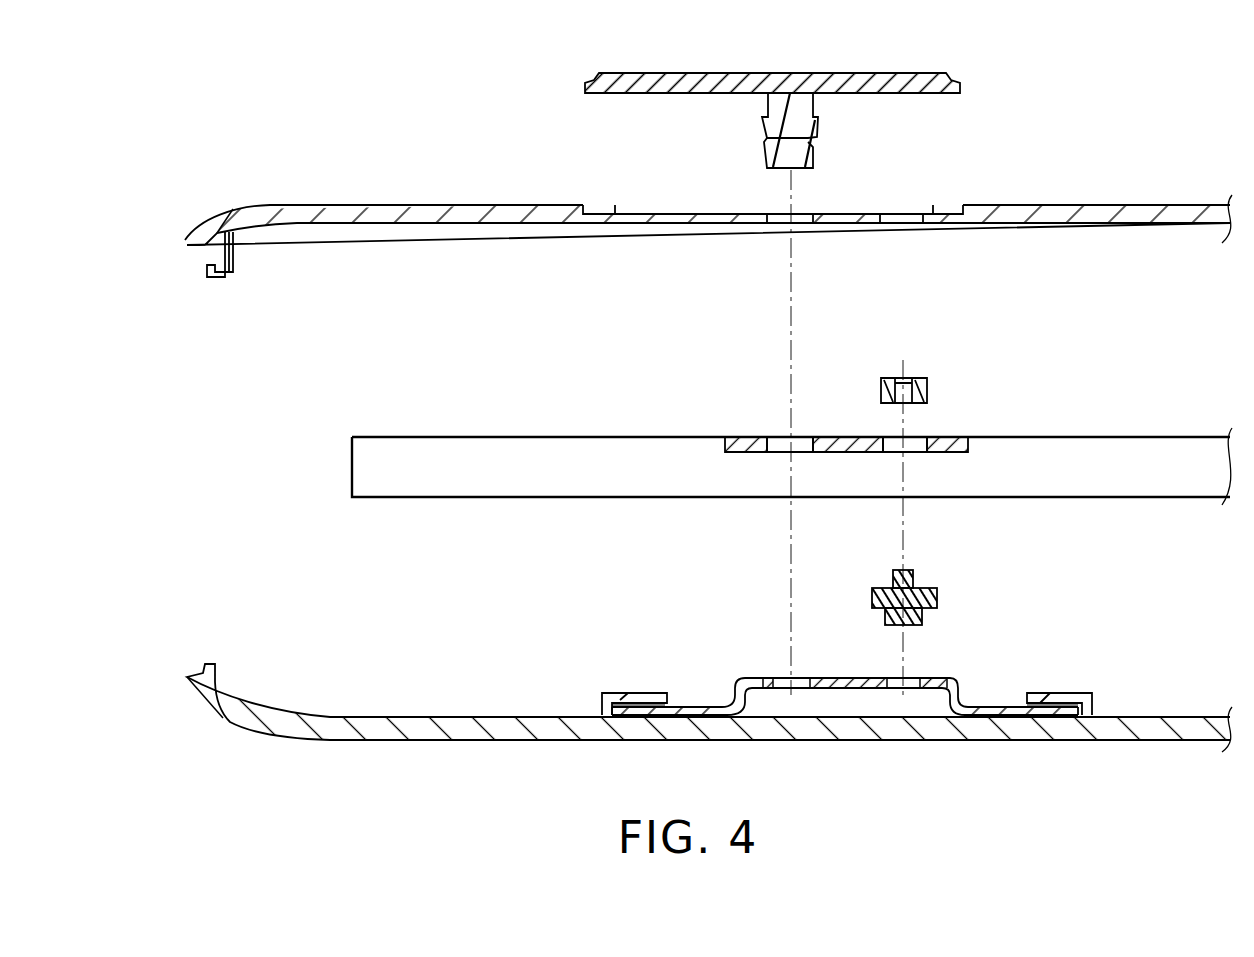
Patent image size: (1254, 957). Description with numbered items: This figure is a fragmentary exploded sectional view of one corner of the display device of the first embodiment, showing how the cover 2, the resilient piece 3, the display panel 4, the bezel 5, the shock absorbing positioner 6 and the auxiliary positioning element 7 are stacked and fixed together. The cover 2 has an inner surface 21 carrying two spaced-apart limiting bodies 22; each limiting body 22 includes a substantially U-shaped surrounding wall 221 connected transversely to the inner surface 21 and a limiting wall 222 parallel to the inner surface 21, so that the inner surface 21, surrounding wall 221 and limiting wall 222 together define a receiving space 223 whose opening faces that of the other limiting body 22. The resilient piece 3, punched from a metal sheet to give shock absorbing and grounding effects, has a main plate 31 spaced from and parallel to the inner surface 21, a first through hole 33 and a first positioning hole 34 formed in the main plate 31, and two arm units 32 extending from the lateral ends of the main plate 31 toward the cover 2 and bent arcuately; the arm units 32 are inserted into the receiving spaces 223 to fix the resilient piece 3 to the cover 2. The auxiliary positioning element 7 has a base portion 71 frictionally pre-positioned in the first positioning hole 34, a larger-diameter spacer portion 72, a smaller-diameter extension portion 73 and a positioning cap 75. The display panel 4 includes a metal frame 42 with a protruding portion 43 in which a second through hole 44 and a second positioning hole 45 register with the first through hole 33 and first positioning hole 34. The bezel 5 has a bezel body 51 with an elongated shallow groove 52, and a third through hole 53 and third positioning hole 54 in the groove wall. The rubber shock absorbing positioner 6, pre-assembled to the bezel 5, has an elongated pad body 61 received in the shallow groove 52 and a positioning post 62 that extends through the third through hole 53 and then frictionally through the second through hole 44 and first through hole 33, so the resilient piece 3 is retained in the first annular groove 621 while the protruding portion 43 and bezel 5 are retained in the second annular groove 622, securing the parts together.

The cover 2 is at (709, 668).
The inner surface 21 is at (421, 717).
The limiting body 22 is at (900, 650).
The surrounding wall 221 is at (1096, 713).
The limiting wall 222 is at (1056, 693).
The receiving space 223 is at (666, 707).
The resilient piece 3 is at (845, 684).
The main plate 31 is at (862, 678).
The arm unit 32 is at (690, 715).
The first through hole 33 is at (783, 678).
The first positioning hole 34 is at (912, 678).
The display panel 4 is at (792, 428).
The frame 42 is at (1096, 462).
The protruding portion 43 is at (968, 448).
The second through hole 44 is at (778, 437).
The second positioning hole 45 is at (889, 437).
The bezel 5 is at (708, 194).
The bezel body 51 is at (1012, 213).
The shallow groove 52 is at (640, 213).
The third through hole 53 is at (773, 223).
The third positioning hole 54 is at (907, 222).
The shock absorbing positioner 6 is at (810, 91).
The pad body 61 is at (873, 85).
The positioning post 62 is at (784, 128).
The first annular groove 621 is at (767, 137).
The second annular groove 622 is at (768, 105).
The auxiliary positioning element 7 is at (936, 572).
The base portion 71 is at (923, 616).
The spacer portion 72 is at (938, 596).
The extension portion 73 is at (895, 572).
The positioning cap 75 is at (926, 384).